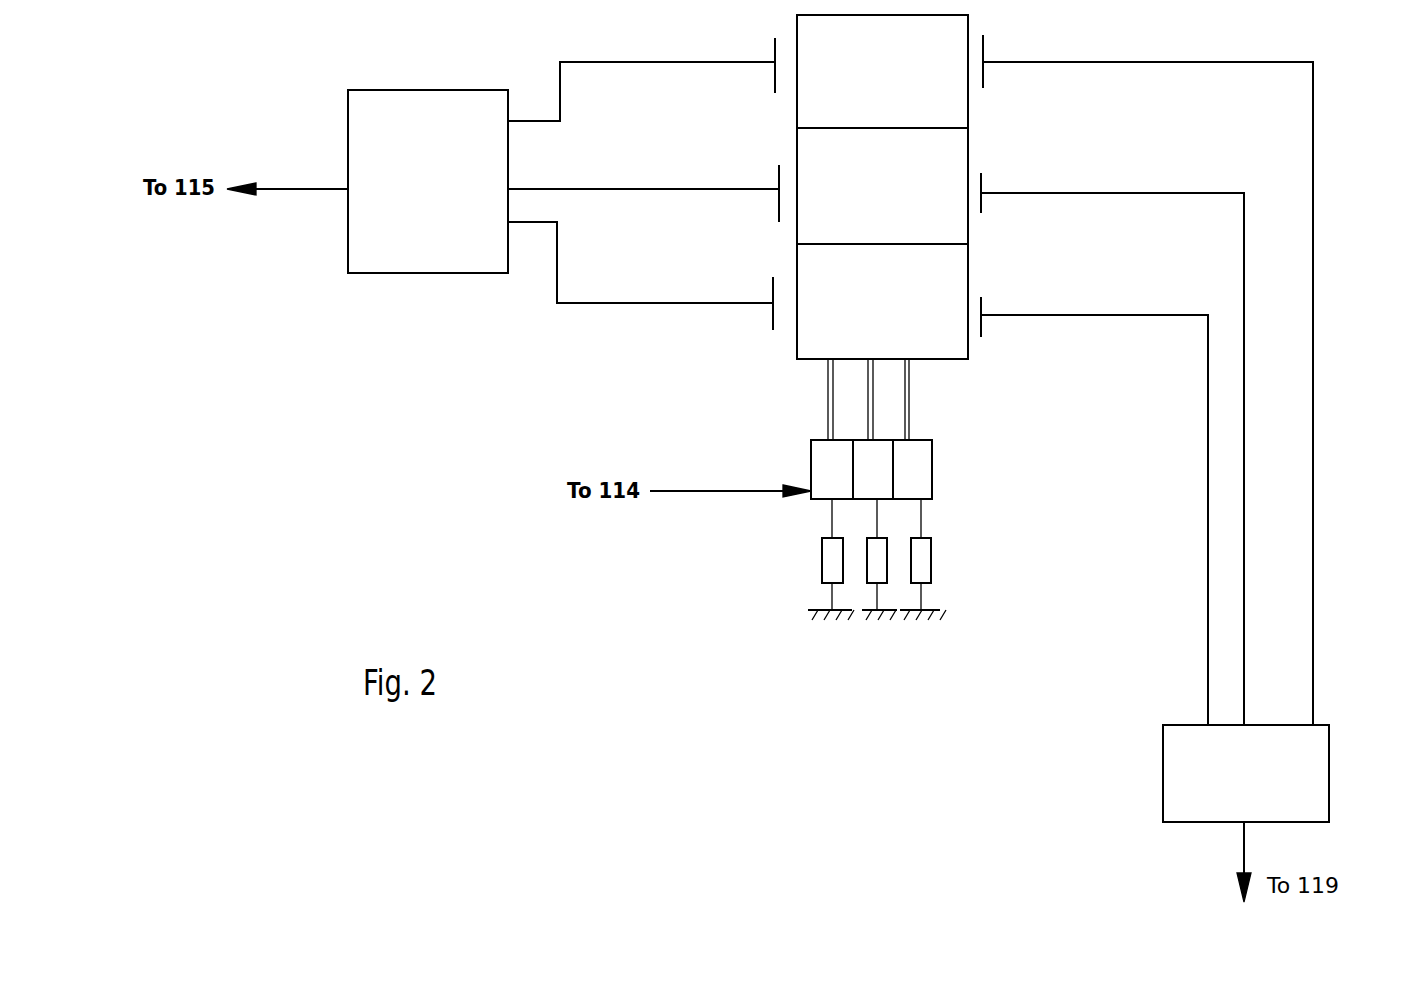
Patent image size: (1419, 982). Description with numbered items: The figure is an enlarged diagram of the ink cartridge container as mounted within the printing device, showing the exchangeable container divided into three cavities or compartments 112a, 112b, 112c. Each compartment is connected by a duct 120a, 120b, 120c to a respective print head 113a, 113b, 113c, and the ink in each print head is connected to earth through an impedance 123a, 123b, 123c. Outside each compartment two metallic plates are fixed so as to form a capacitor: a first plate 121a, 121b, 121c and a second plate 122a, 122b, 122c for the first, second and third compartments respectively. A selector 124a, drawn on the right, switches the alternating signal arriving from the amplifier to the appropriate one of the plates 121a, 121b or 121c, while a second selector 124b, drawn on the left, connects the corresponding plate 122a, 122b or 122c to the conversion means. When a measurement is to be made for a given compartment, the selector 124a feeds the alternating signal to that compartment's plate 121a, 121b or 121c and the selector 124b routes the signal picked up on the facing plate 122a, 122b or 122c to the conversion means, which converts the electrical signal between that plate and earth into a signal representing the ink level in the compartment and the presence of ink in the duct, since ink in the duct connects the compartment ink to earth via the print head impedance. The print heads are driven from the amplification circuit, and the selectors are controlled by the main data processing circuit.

The compartment 112a is at (882, 71).
The compartment 112b is at (882, 186).
The compartment 112c is at (882, 301).
The print head 113a is at (810, 472).
The print head 113b is at (870, 491).
The print head 113c is at (932, 462).
The duct 120a is at (828, 403).
The duct 120b is at (870, 410).
The duct 120c is at (908, 392).
The metallic plate 121a is at (990, 62).
The metallic plate 121b is at (985, 193).
The metallic plate 121c is at (985, 315).
The metallic plate 122a is at (765, 62).
The metallic plate 122b is at (779, 188).
The metallic plate 122c is at (773, 303).
The impedance 123a is at (822, 566).
The impedance 123b is at (874, 569).
The impedance 123c is at (932, 553).
The selector 124a is at (1329, 770).
The selector 124b is at (348, 106).